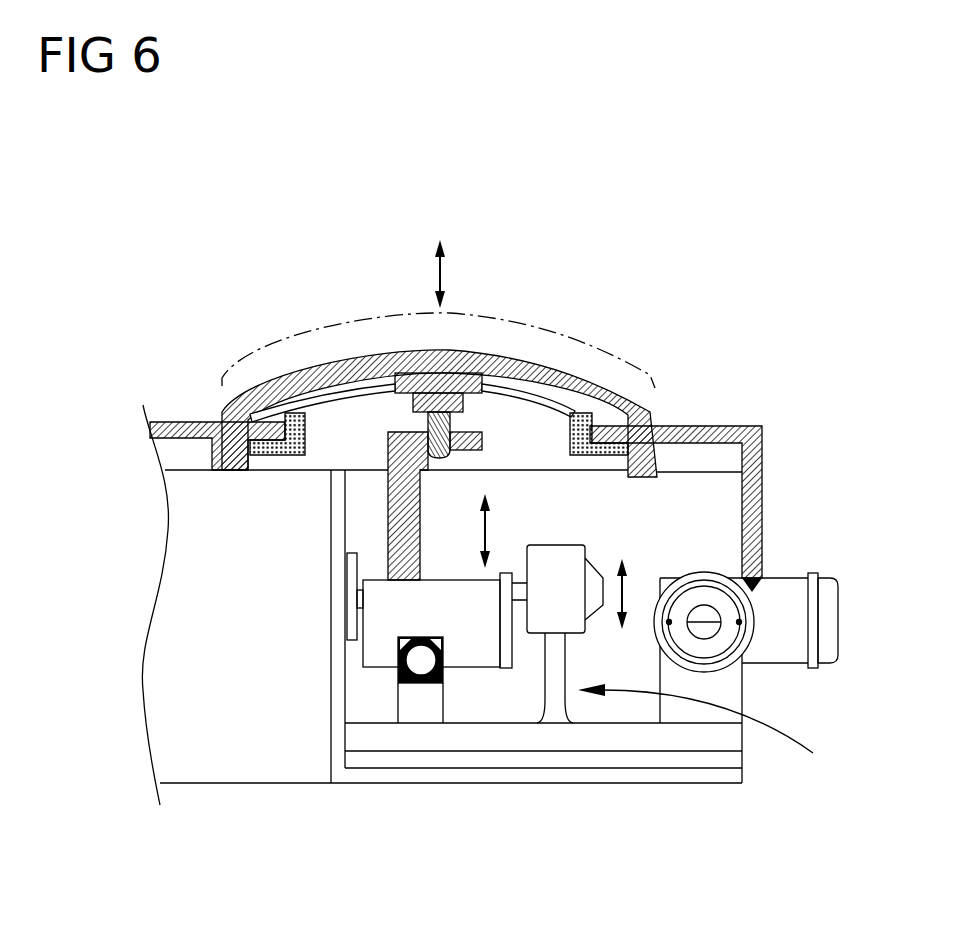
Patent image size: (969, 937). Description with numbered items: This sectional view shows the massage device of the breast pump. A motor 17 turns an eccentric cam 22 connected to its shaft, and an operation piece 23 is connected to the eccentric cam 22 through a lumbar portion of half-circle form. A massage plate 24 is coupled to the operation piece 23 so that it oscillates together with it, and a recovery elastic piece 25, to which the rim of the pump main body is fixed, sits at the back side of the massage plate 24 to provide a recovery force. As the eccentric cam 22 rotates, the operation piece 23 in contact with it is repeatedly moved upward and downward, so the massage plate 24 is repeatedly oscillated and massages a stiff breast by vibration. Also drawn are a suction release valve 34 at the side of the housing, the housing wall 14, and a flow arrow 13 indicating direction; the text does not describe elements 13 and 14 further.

The air flow direction 13 is at (713, 737).
The cabinet top wall 14 is at (703, 427).
The motor 17 is at (247, 624).
The eccentric cam 22 is at (485, 643).
The operation piece 23 is at (385, 448).
The massage plate 24 is at (470, 367).
The recovery elastic piece 25 is at (583, 417).
The suction release valve 34 is at (758, 575).